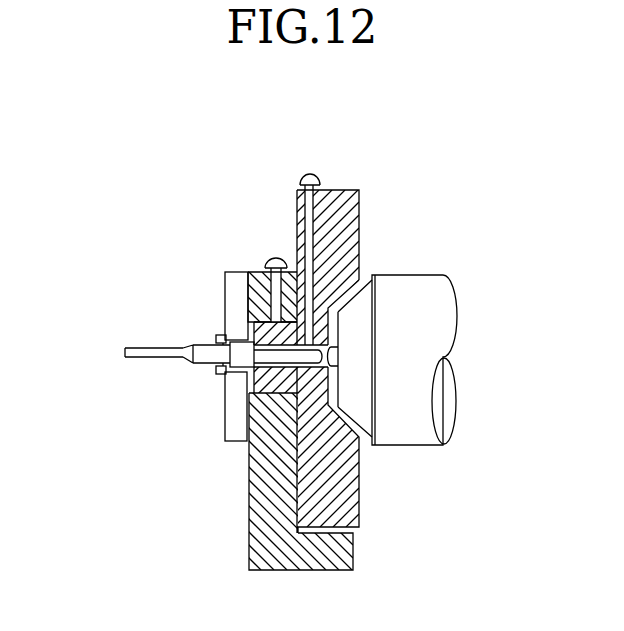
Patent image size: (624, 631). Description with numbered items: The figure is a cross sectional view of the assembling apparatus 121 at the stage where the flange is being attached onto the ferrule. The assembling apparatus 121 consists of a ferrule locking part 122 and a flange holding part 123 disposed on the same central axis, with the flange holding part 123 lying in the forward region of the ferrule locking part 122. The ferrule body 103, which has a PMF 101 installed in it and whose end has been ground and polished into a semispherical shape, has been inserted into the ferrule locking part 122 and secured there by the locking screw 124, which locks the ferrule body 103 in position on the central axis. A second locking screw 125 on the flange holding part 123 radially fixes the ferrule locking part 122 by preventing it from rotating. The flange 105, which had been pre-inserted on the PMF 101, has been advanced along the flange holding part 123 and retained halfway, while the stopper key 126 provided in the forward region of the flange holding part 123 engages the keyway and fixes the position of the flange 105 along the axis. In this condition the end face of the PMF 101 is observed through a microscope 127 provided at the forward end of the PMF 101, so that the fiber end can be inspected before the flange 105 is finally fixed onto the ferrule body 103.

The PMF 101 is at (132, 360).
The ferrule body 103 is at (207, 342).
The flange 105 is at (213, 373).
The assembling apparatus 121 is at (383, 192).
The ferrule locking part 122 is at (335, 190).
The flange holding part 123 is at (235, 271).
The locking screw 124 is at (312, 173).
The locking screw 125 is at (275, 257).
The stopper key 126 is at (232, 287).
The microscope 127 is at (422, 275).